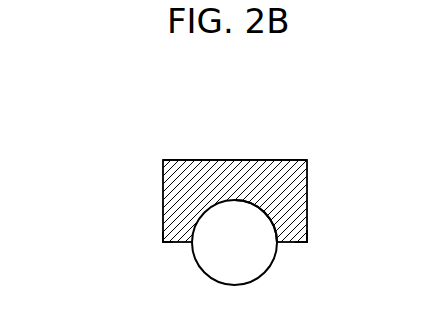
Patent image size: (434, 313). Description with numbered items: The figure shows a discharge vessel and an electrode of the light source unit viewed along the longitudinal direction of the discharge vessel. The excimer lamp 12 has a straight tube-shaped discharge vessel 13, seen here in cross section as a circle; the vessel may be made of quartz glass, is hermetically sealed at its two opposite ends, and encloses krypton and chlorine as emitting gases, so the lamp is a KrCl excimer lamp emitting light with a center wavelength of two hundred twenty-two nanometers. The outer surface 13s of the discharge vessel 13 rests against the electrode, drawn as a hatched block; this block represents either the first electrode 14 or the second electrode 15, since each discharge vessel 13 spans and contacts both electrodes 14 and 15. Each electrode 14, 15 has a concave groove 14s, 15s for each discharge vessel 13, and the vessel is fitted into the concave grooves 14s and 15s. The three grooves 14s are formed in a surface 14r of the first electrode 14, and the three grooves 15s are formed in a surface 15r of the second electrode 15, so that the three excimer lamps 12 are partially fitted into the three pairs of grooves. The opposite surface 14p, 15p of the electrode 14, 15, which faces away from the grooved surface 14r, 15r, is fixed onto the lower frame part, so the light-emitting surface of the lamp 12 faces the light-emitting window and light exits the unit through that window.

The excimer lamp 12 is at (308, 261).
The discharge vessel 13 is at (203, 272).
The spherical surface of ball 13s is at (279, 208).
The first electrode 14 is at (183, 201).
The second electrode 15 is at (163, 208).
The surface of the first electrode 14p is at (247, 134).
The surface of the second electrode 15p is at (258, 160).
The concave groove 14s is at (292, 265).
The concave groove 15s is at (265, 222).
The surface of the first electrode 14r is at (104, 264).
The surface of the second electrode 15r is at (167, 247).